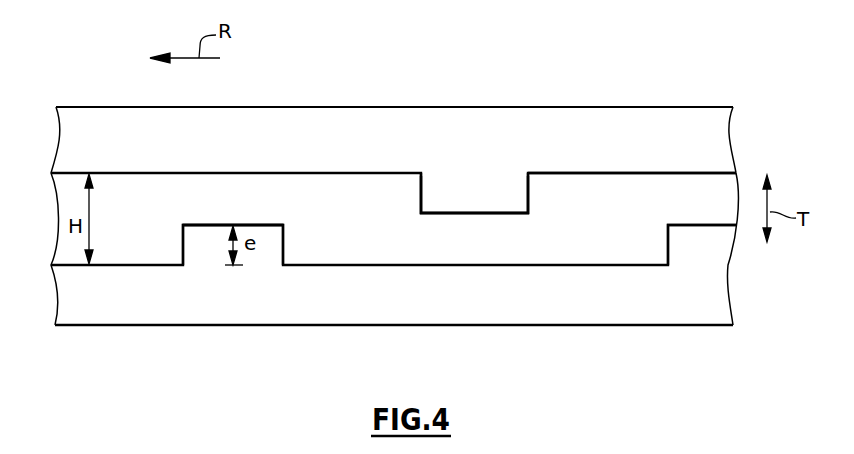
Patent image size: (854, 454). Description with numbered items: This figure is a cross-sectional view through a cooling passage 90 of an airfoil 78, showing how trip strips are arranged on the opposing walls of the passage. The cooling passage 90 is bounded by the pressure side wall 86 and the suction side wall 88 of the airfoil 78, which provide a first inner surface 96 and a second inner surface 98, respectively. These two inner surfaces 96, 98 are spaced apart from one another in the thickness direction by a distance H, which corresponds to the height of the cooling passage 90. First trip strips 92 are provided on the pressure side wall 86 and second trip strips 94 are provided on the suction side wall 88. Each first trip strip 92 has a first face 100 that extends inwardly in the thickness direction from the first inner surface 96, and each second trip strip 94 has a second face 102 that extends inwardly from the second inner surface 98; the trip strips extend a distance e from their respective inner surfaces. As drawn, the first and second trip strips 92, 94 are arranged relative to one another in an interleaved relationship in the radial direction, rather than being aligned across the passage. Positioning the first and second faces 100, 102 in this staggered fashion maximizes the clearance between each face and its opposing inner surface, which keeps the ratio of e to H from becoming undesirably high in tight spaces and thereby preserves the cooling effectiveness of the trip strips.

The airfoil 78 is at (445, 70).
The pressure side wall 86 is at (403, 317).
The suction side wall 88 is at (276, 118).
The cooling passage 90 is at (650, 210).
The first trip strip 92 is at (183, 246).
The second trip strip 94 is at (531, 185).
The first inner surface 96 is at (433, 265).
The second inner surface 98 is at (295, 176).
The first face 100 is at (214, 224).
The second face 102 is at (510, 216).